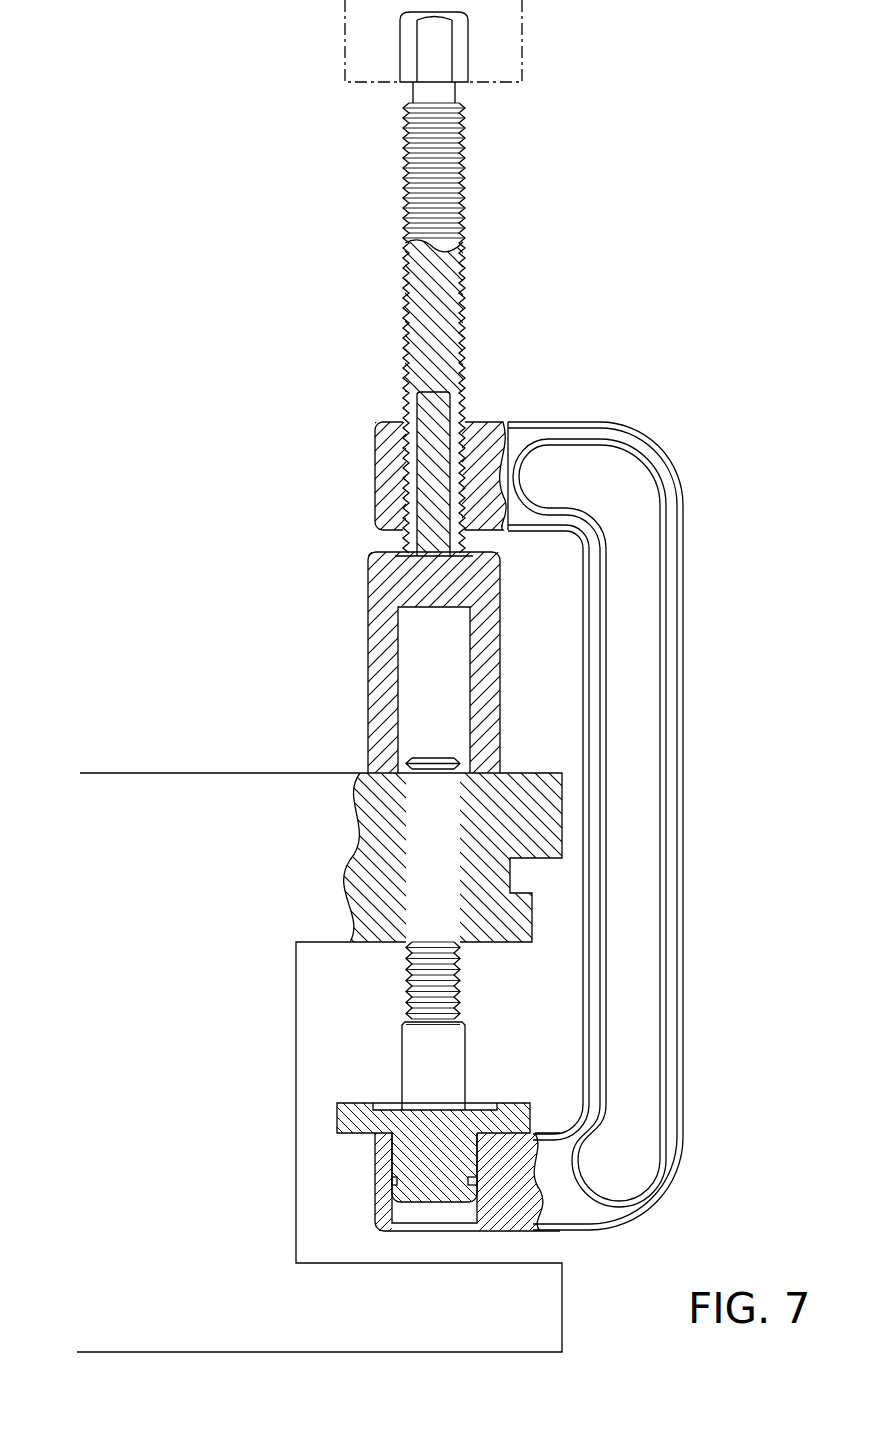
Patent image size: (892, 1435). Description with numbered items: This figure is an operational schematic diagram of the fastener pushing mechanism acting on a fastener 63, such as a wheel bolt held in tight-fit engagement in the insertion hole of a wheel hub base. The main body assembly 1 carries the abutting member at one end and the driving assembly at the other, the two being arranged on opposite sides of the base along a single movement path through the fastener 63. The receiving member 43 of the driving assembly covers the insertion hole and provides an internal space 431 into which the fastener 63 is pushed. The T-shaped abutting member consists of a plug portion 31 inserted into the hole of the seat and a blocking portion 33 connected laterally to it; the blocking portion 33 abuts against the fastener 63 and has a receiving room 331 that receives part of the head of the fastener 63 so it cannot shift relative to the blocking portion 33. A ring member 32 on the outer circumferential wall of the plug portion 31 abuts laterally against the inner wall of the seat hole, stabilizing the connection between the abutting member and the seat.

The main body assembly 1 is at (640, 637).
The receiving member 43 is at (383, 593).
The internal space 431 is at (440, 705).
The fastener 63 is at (424, 1052).
The blocking portion 33 is at (517, 1117).
The receiving room 331 is at (483, 1107).
The plug portion 31 is at (440, 1191).
The ring member 32 is at (477, 1182).